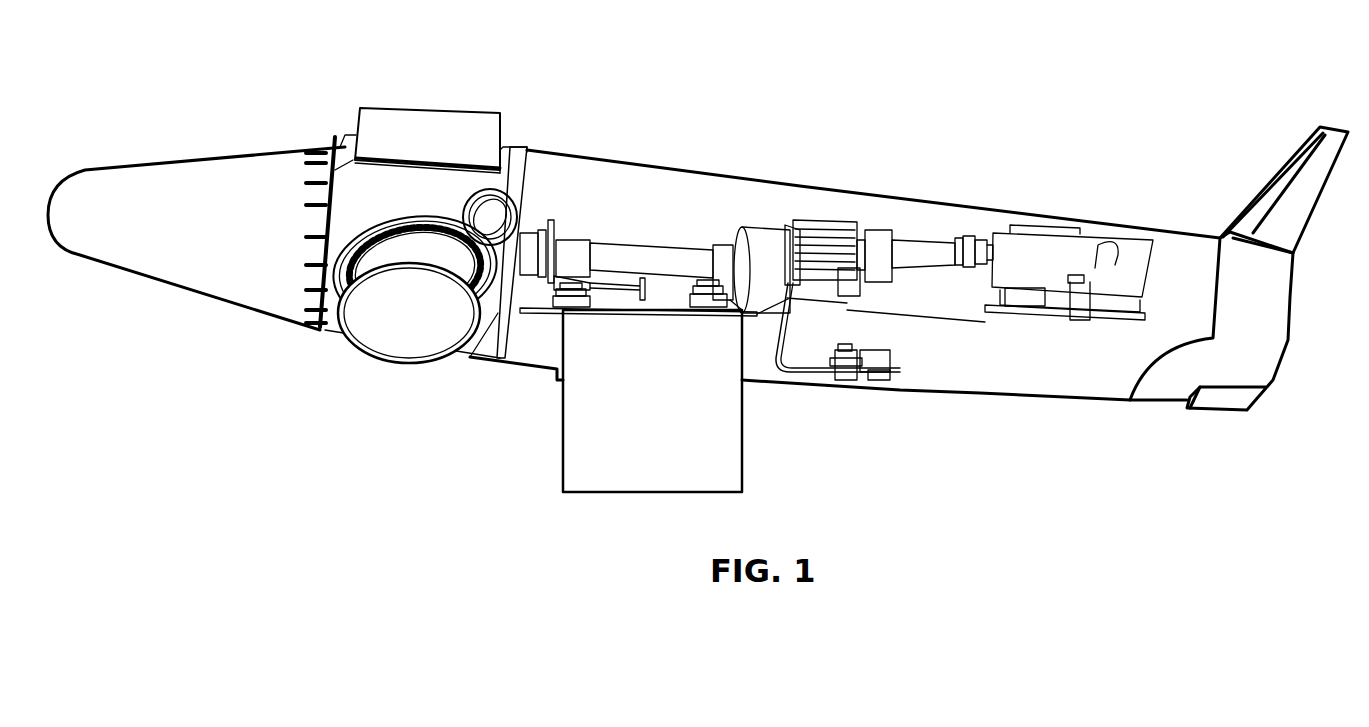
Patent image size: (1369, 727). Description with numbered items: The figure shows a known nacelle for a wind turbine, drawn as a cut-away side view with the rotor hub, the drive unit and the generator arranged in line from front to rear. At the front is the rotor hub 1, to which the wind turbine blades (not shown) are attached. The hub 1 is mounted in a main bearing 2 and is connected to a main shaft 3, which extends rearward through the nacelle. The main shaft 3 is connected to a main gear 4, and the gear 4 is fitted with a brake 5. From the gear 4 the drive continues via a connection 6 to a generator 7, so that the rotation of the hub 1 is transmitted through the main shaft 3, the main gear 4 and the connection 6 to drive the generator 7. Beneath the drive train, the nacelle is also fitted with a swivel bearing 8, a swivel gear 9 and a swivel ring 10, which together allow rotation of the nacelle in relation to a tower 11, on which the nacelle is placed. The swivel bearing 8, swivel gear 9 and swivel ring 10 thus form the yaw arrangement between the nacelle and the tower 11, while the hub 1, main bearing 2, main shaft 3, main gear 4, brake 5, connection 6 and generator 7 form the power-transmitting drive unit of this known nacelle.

The rotor hub 1 is at (370, 205).
The main bearing 2 is at (570, 240).
The main shaft 3 is at (632, 252).
The main gear 4 is at (758, 228).
The brake 5 is at (890, 220).
The connection 6 is at (968, 245).
The generator 7 is at (1088, 250).
The swivel bearing 8 is at (515, 313).
The swivel gear 9 is at (557, 313).
The swivel ring 10 is at (590, 315).
The tower 11 is at (729, 430).